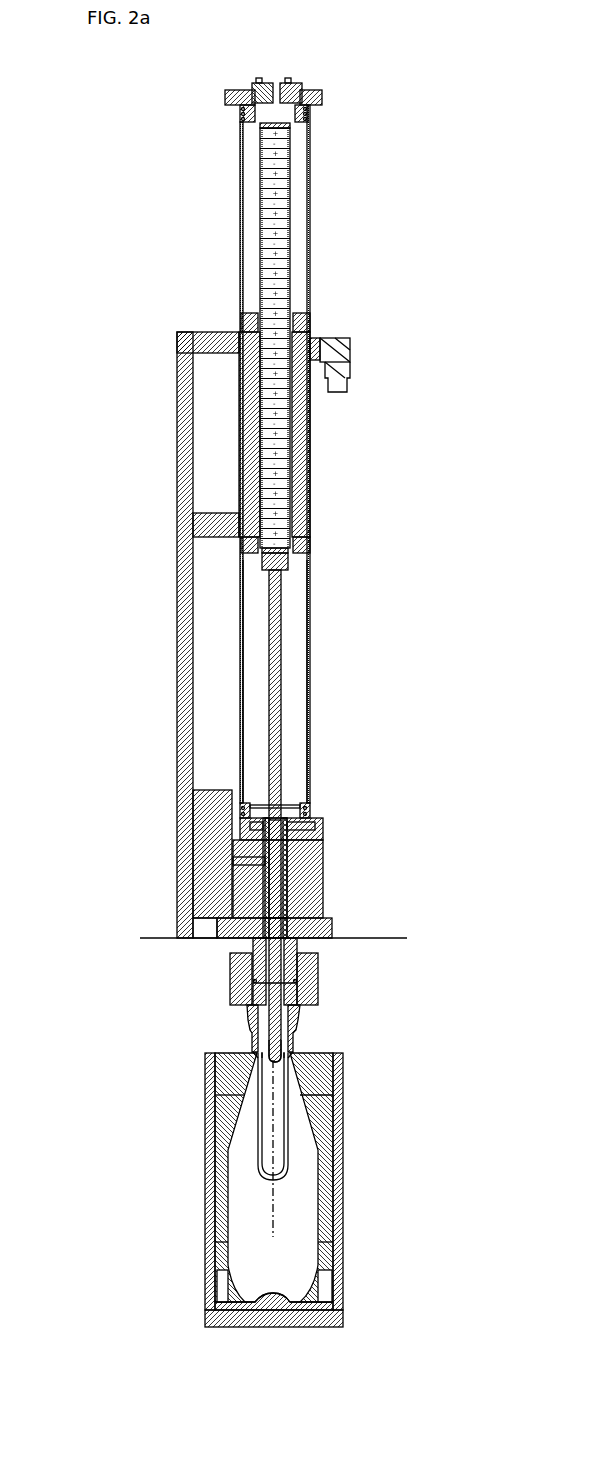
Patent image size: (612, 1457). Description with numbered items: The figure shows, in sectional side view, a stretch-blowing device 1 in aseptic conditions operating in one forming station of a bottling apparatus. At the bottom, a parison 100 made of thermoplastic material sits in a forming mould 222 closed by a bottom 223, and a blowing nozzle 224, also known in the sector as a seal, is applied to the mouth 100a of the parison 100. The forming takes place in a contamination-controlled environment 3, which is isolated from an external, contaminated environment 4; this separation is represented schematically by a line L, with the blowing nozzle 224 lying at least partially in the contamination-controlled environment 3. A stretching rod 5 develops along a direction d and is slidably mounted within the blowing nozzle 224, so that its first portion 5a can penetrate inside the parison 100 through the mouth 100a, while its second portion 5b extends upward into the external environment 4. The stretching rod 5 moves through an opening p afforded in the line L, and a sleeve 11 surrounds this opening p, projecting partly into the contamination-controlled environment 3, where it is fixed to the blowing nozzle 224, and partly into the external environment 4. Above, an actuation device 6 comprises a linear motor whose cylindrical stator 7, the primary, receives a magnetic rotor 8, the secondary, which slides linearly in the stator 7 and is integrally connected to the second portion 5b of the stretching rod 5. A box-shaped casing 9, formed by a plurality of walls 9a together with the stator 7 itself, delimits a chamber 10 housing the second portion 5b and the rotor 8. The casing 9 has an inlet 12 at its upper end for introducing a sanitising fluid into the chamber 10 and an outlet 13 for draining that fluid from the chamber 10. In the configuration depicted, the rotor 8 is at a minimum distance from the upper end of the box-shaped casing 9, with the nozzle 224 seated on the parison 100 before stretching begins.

The stretch-blowing device 1 is at (127, 255).
The contamination-controlled environment 3 is at (130, 1088).
The external environment 4 is at (185, 145).
The stretching rod 5 is at (285, 789).
The first portion 5a is at (285, 1060).
The second portion 5b is at (282, 620).
The actuation device 6 is at (319, 445).
The cylindrical stator 7 is at (306, 503).
The rotor 8 is at (286, 208).
The box-shaped casing 9 is at (313, 137).
The walls 9a is at (311, 170).
The chamber 10 is at (298, 660).
The sleeve 11 is at (251, 947).
The inlet 12 is at (276, 76).
The outlet 13 is at (309, 860).
The parison 100 is at (257, 1167).
The mouth 100a is at (254, 1044).
The forming mould 222 is at (350, 1256).
The bottom 223 is at (282, 1326).
The blowing nozzle 224 is at (316, 987).
The direction d is at (276, 1115).
The opening p is at (283, 933).
The line L is at (378, 937).